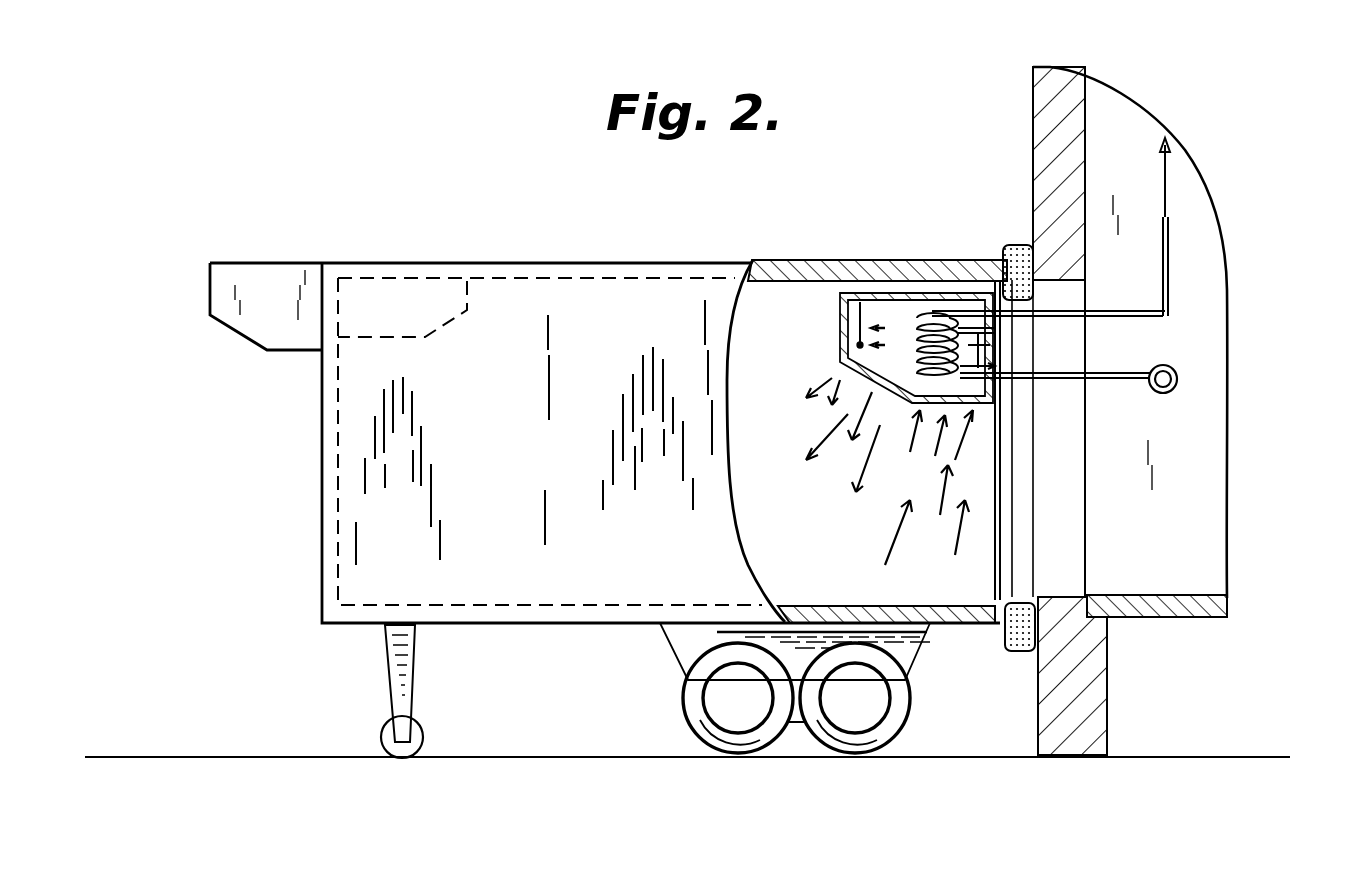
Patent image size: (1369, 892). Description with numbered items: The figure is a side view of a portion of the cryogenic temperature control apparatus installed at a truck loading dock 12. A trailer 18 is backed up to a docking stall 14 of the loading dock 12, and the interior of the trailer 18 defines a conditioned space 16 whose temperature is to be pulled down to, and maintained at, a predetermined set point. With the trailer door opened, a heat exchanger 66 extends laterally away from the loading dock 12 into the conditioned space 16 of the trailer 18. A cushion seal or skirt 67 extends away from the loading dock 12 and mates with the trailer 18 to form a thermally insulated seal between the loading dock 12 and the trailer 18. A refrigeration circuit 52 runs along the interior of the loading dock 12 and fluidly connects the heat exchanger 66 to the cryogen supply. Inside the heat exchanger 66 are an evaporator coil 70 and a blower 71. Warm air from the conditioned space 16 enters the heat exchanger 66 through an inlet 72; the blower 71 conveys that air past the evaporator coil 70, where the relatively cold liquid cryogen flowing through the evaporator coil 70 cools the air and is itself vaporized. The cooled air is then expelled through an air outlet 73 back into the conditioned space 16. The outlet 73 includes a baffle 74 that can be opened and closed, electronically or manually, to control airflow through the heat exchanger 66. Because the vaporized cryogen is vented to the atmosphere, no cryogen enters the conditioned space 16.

The loading dock 12 is at (1042, 109).
The docking stall 14 is at (1035, 670).
The conditioned space 16 is at (580, 461).
The trailer 18 is at (548, 262).
The refrigeration circuit 52 is at (1178, 372).
The heat exchanger 66 is at (846, 337).
The cushion seal 67 is at (1016, 258).
The evaporator coil 70 is at (925, 316).
The blower 71 is at (1002, 345).
The inlet 72 is at (860, 462).
The air outlet 73 is at (882, 430).
The baffle 74 is at (856, 313).